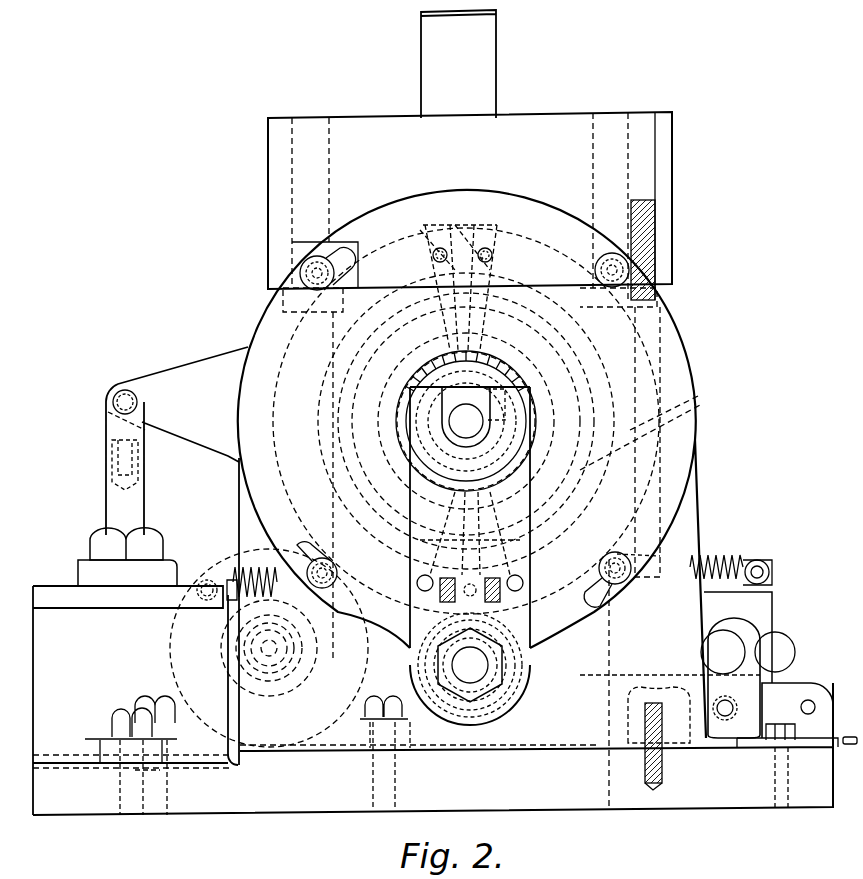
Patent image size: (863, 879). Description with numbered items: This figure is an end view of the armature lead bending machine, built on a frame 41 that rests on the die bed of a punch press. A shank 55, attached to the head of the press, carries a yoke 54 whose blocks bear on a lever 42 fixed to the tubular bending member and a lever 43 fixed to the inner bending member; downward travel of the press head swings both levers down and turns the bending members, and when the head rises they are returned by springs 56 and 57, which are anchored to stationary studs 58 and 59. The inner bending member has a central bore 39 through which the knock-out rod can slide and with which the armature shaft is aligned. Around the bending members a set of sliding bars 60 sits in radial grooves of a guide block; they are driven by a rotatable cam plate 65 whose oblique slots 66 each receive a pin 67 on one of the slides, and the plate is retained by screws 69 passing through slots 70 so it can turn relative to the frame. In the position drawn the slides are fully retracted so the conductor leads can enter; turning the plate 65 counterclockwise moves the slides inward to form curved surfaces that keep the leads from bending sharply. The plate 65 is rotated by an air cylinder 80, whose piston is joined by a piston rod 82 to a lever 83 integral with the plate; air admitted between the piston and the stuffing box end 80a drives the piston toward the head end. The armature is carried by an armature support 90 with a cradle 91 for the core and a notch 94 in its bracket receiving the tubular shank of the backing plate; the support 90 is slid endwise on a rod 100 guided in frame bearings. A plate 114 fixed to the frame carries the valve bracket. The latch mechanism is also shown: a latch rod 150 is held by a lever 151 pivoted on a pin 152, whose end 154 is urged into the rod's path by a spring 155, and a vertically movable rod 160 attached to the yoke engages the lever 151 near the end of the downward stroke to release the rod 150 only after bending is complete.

The central bore 39 is at (466, 417).
The frame 41 is at (294, 802).
The lever 42 is at (272, 342).
The lever 43 is at (640, 323).
The yoke 54 is at (270, 166).
The shank 55 is at (430, 67).
The spring 56 is at (722, 566).
The spring 57 is at (262, 567).
The stationary stud 58 is at (760, 566).
The stationary stud 59 is at (208, 582).
The sliding bars 60 is at (450, 232).
The cam plate 65 is at (256, 514).
The oblique slots 66 is at (440, 247).
The pin 67 is at (490, 246).
The screws 69 is at (628, 556).
The slots 70 is at (615, 596).
The cylinder 80 is at (58, 606).
The stuffing box end 80a is at (170, 566).
The piston rod 82 is at (107, 487).
The lever 83 is at (172, 380).
The armature support 90 is at (532, 565).
The cradle 91 is at (438, 452).
The notch 94 is at (480, 438).
The rod 100 is at (474, 666).
The plate 114 is at (850, 746).
The latch rod 150 is at (808, 714).
The lever 151 is at (650, 687).
The pin 152 is at (730, 718).
The end of the lever 154 is at (824, 698).
The spring 155 is at (644, 736).
The vertically movable rod 160 is at (665, 500).